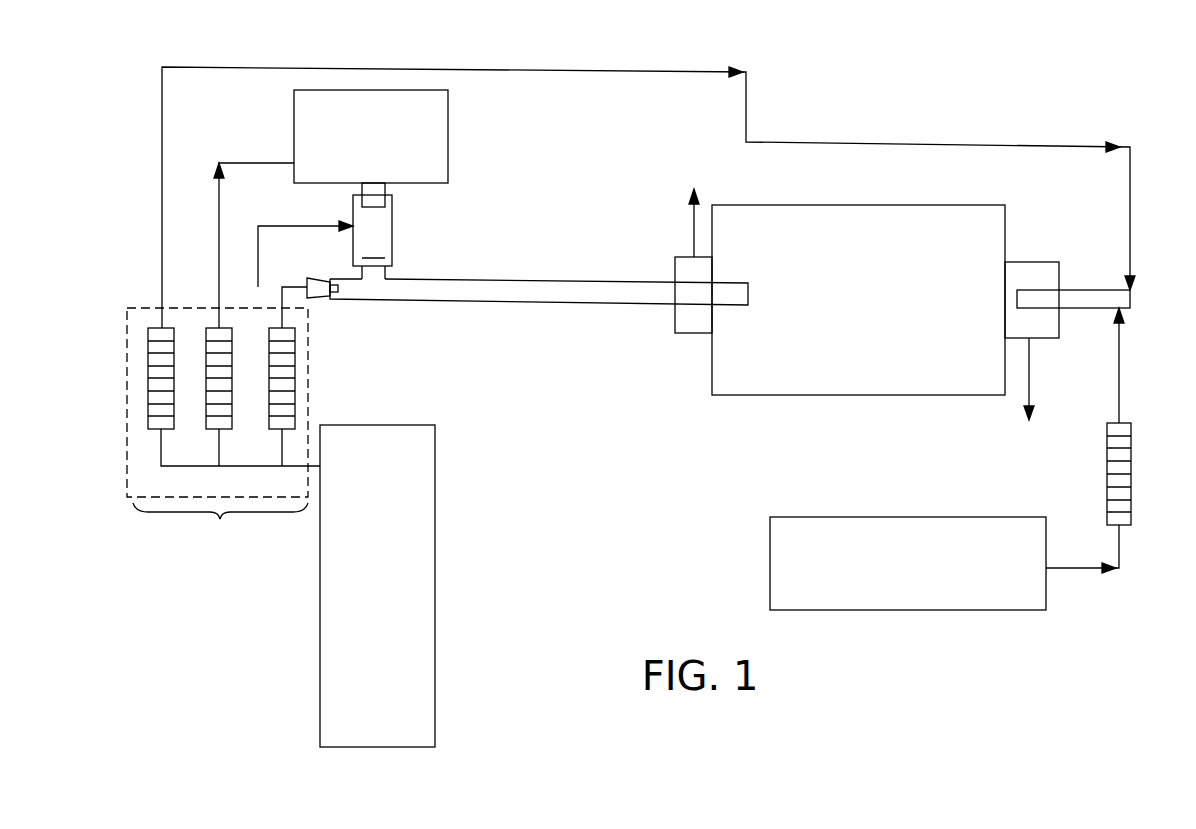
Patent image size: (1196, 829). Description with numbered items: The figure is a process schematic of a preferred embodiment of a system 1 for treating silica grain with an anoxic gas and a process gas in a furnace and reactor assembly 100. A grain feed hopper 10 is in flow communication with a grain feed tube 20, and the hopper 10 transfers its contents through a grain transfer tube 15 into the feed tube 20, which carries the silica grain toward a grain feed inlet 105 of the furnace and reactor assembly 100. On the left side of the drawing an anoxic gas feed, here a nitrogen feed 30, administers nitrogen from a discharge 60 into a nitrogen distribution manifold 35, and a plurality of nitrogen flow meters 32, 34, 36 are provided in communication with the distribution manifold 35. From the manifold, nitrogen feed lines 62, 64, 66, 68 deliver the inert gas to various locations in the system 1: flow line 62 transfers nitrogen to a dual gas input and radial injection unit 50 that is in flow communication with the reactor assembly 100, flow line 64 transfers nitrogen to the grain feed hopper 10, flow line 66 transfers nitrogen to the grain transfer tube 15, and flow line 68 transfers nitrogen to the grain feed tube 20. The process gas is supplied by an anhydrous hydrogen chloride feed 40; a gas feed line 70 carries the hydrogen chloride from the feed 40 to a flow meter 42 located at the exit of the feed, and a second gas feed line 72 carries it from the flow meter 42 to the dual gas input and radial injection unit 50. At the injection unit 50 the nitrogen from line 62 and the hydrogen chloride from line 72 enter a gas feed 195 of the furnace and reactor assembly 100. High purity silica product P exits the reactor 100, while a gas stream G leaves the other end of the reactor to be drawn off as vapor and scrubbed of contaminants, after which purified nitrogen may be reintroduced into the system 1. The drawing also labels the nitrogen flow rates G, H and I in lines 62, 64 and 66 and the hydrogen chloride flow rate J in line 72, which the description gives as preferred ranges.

The system 1 is at (972, 125).
The grain feed hopper 10 is at (436, 130).
The grain transfer tube 15 is at (393, 232).
The grain feed tube 20 is at (497, 286).
The nitrogen feed 30 is at (408, 565).
The flow meter 32 is at (150, 372).
The flow meter 34 is at (208, 360).
The nitrogen distribution manifold 35 is at (223, 429).
The flow meter 36 is at (276, 387).
The anhydrous hydrogen chloride feed 40 is at (912, 585).
The flow meter 42 is at (1118, 500).
The dual gas input and radial injection unit 50 is at (1124, 303).
The discharge 60 is at (318, 462).
The nitrogen feed line 62 is at (622, 68).
The nitrogen feed line 64 is at (217, 205).
The nitrogen feed line 66 is at (258, 250).
The nitrogen feed line 68 is at (307, 289).
The gas feed line 70 is at (1072, 570).
The second gas feed line 72 is at (1113, 372).
The furnace and reactor assembly 100 is at (1007, 202).
The grain feed inlet 105 is at (675, 278).
The gas feed 195 is at (1062, 289).